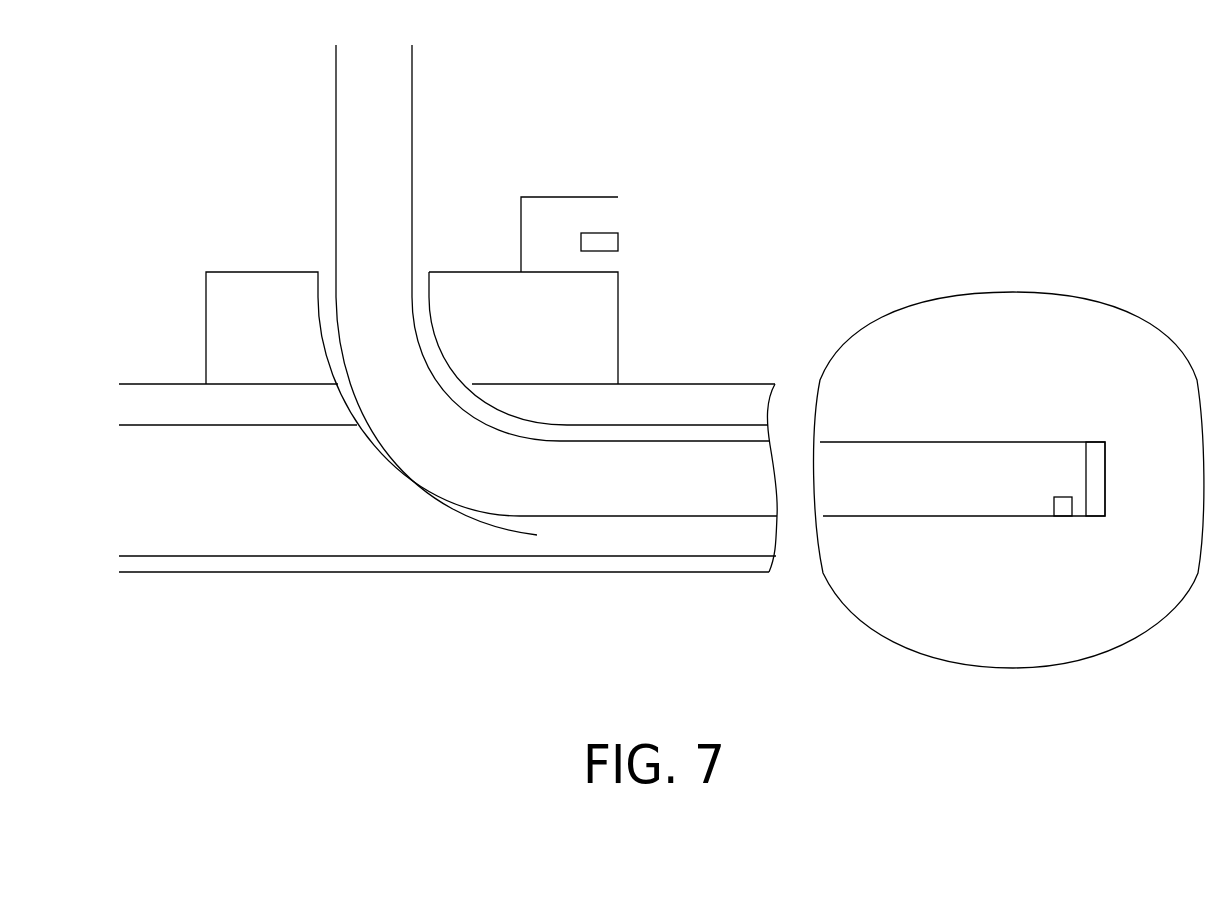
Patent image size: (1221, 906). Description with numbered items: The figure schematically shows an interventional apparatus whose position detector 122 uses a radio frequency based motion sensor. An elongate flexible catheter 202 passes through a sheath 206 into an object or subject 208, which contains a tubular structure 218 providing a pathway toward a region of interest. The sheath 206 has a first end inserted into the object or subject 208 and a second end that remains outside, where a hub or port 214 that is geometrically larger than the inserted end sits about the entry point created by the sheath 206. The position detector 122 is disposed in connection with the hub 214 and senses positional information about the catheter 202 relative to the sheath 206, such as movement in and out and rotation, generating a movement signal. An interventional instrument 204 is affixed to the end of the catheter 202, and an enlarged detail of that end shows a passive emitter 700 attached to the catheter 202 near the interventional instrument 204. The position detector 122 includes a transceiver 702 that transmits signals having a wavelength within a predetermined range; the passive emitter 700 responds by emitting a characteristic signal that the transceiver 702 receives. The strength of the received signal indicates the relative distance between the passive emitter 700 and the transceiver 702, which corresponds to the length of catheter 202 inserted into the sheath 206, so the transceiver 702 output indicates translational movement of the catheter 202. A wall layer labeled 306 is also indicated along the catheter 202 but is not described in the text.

The position detector 122 is at (548, 197).
The elongate flexible catheter 202 is at (336, 87).
The interventional instrument 204 is at (1096, 442).
The sheath 206 is at (418, 488).
The object or subject 208 is at (288, 574).
The hub or port 214 is at (206, 313).
The tubular structure 218 is at (218, 553).
The tube wall 306 is at (336, 222).
The passive emitter 700 is at (1063, 510).
The transceiver 702 is at (598, 228).